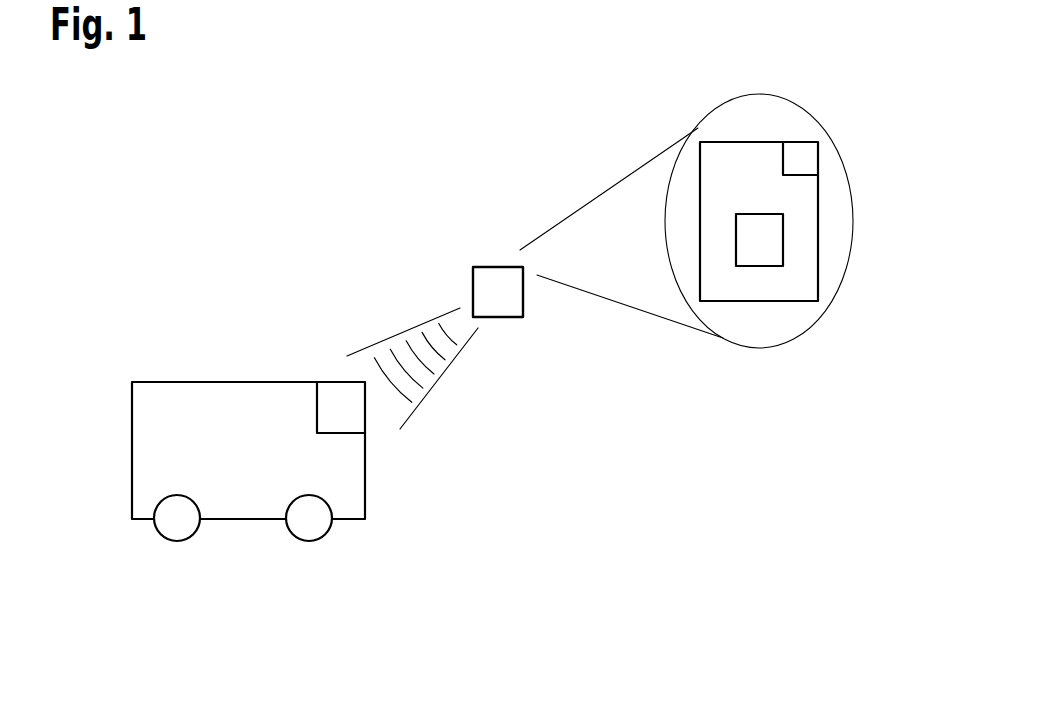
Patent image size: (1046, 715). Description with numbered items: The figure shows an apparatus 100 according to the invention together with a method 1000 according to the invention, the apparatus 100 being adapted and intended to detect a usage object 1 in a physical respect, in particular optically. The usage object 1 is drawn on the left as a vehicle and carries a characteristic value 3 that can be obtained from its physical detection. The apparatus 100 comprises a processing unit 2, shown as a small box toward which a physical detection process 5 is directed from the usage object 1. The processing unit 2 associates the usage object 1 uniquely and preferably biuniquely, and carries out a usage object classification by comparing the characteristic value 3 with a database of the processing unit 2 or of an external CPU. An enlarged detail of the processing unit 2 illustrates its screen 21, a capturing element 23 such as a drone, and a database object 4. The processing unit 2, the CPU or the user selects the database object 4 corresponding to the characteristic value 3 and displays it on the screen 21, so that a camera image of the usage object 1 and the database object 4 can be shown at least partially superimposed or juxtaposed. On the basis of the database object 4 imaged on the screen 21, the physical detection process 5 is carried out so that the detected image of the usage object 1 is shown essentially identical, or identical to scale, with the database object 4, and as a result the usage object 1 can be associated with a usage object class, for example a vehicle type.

The apparatus 100 is at (202, 223).
The usage object 1 is at (152, 381).
The characteristic value 3 is at (330, 406).
The processing unit 2 is at (498, 267).
The physical detection process 5 is at (448, 389).
The method 1000 is at (772, 132).
The screen 21 is at (820, 210).
The capturing element (drone) 23 is at (802, 157).
The database object 4 is at (768, 242).